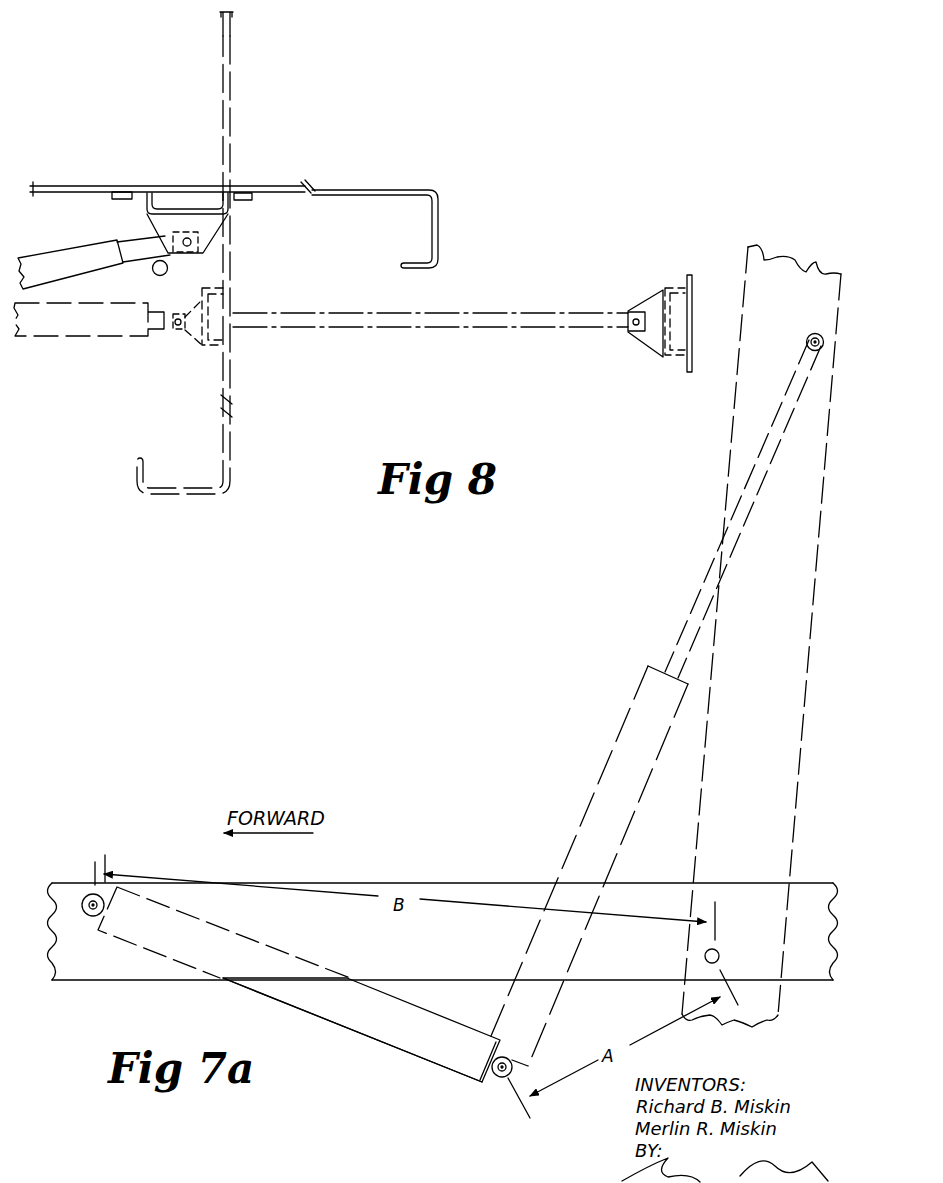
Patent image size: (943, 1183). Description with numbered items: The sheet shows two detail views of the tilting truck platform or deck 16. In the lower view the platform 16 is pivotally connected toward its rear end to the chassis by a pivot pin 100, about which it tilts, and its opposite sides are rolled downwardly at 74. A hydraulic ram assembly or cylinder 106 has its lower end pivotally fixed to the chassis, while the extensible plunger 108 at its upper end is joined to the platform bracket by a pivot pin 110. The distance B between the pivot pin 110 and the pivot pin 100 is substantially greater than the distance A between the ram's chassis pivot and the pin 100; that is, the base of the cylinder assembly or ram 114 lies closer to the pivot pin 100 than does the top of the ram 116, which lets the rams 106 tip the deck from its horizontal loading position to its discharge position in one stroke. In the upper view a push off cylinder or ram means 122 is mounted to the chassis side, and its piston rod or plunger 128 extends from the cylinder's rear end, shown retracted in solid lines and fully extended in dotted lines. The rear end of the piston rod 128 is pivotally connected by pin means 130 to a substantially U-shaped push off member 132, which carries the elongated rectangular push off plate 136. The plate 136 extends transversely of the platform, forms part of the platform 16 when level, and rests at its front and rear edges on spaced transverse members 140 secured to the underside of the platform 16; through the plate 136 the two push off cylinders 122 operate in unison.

In FIG. 8, the platform or deck 16 is at (349, 190).
In FIG. 7A, the platform or deck 16 is at (795, 851).
In FIG. 7A, the downwardly rolled sides of the deck 74 is at (230, 857).
In FIG. 7A, the pivot pin 100 is at (714, 949).
In FIG. 7A, the hydraulic ram assembly or cylinder 106 is at (250, 995).
In FIG. 7A, the extensible plunger 108 is at (683, 623).
In FIG. 7A, the pivot pin 110 is at (88, 895).
In FIG. 7A, the base of the cylinder assembly or ram 114 is at (378, 1041).
In FIG. 7A, the top of the ram 116 is at (156, 955).
In FIG. 8, the push off cylinder or ram means 122 is at (78, 258).
In FIG. 8, the piston rod or plunger 128 is at (147, 262).
In FIG. 8, the pin means 130 is at (190, 245).
In FIG. 8, the push off members 132 is at (207, 234).
In FIG. 8, the push off plate 136 is at (194, 168).
In FIG. 8, the transverse members 140 is at (128, 200).